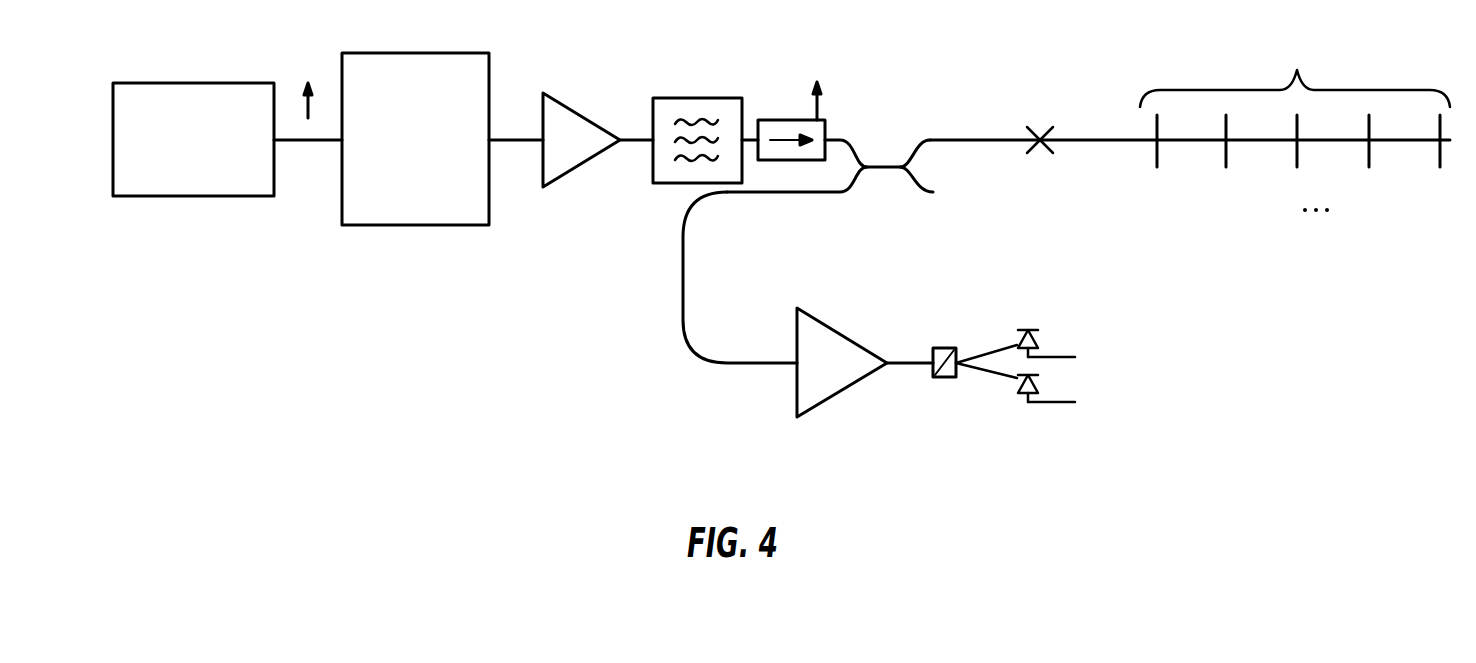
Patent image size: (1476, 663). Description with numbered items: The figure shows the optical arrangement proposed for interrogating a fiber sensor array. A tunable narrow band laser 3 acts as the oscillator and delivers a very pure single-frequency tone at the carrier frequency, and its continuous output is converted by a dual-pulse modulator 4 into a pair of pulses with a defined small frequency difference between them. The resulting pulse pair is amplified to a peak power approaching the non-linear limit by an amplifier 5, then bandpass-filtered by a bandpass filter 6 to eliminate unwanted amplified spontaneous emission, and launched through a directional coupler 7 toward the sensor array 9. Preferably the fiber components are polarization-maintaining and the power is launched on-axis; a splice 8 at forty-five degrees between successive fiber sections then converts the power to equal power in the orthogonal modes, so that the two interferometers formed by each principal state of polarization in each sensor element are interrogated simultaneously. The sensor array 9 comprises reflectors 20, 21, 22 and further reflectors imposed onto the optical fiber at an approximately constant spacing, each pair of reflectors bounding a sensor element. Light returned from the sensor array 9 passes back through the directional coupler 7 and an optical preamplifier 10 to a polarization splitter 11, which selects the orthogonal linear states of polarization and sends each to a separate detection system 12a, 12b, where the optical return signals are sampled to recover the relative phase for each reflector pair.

The narrow band laser 3 is at (143, 83).
The dual-pulse modulator 4 is at (368, 53).
The amplifier 5 is at (568, 168).
The bandpass filter 6 is at (680, 98).
The directional coupler 7 is at (892, 167).
The splice 8 is at (1033, 145).
The sensor array 9 is at (1295, 99).
The reflector 20 is at (1155, 153).
The reflector 21 is at (1224, 153).
The reflector 22 is at (1296, 153).
The optical preamplifier 10 is at (838, 393).
The polarization splitter 11 is at (937, 348).
The detection system 12a is at (1040, 342).
The detection system 12b is at (1040, 390).